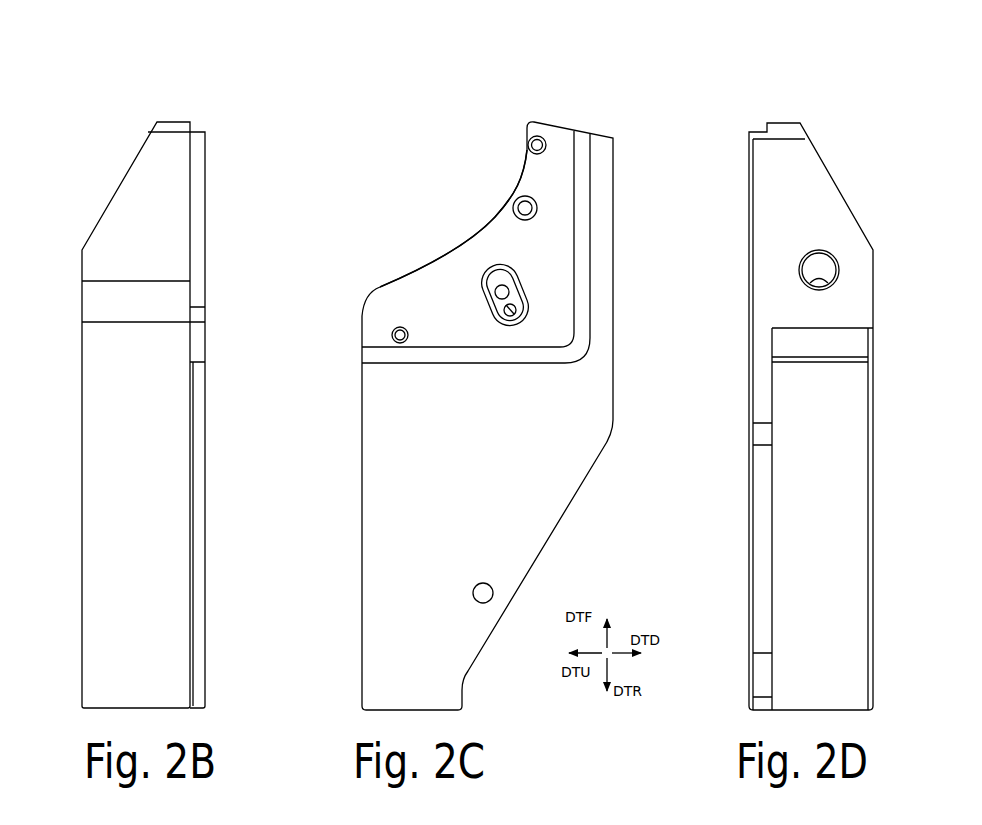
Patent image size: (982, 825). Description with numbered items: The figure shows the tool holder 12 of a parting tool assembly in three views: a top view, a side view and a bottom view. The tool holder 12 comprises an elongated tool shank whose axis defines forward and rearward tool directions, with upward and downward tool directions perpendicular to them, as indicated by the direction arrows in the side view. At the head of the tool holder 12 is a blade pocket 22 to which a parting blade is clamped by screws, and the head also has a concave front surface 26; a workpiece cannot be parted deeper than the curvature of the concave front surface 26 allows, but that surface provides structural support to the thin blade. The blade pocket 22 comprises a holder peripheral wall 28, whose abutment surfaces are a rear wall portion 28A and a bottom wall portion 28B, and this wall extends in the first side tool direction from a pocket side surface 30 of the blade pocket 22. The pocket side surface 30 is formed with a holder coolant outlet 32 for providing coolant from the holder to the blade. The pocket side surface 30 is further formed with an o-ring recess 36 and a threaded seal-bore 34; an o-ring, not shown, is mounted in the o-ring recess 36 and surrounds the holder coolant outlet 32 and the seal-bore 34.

In FIG. 2B, the tool holder 12 is at (121, 116).
In FIG. 2C, the tool holder 12 is at (478, 371).
In FIG. 2D, the tool holder 12 is at (734, 95).
In FIG. 2C, the blade pocket 22 is at (439, 285).
In FIG. 2C, the concave front surface 26 is at (496, 207).
In FIG. 2C, the holder peripheral wall 28 is at (438, 245).
In FIG. 2C, the rear wall portion 28A is at (433, 362).
In FIG. 2C, the bottom wall portion 28B is at (590, 178).
In FIG. 2C, the pocket side surface 30 is at (472, 263).
In FIG. 2C, the holder coolant outlet 32 is at (520, 303).
In FIG. 2C, the threaded seal-bore 34 is at (518, 281).
In FIG. 2C, the o-ring recess 36 is at (514, 268).